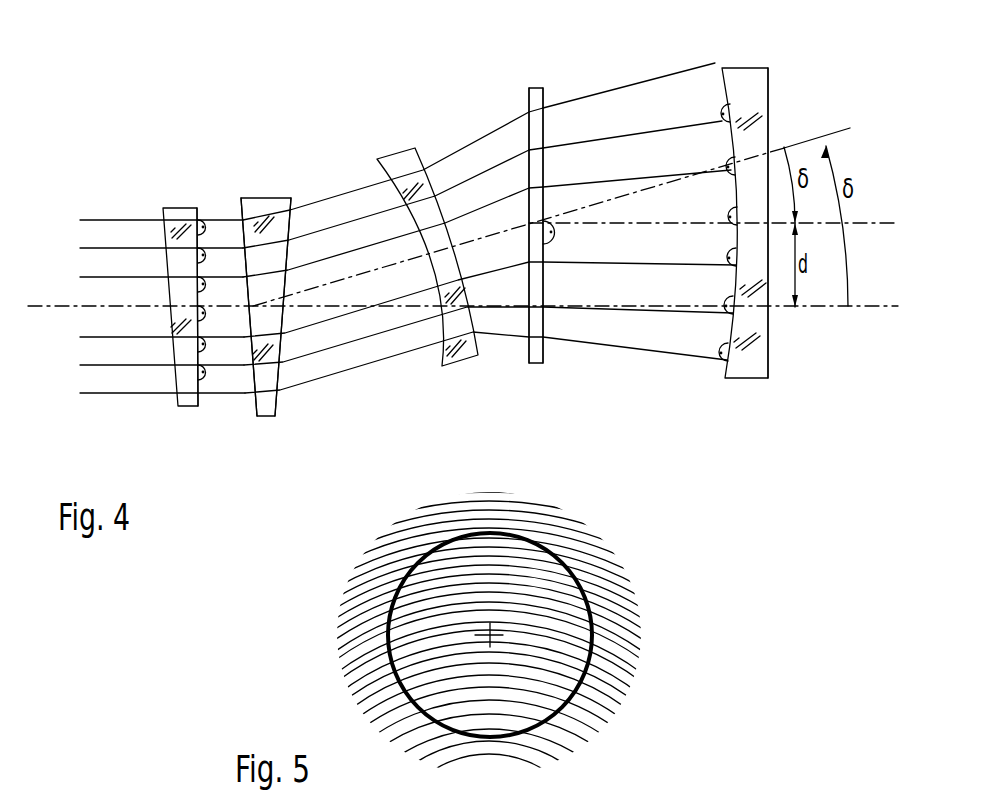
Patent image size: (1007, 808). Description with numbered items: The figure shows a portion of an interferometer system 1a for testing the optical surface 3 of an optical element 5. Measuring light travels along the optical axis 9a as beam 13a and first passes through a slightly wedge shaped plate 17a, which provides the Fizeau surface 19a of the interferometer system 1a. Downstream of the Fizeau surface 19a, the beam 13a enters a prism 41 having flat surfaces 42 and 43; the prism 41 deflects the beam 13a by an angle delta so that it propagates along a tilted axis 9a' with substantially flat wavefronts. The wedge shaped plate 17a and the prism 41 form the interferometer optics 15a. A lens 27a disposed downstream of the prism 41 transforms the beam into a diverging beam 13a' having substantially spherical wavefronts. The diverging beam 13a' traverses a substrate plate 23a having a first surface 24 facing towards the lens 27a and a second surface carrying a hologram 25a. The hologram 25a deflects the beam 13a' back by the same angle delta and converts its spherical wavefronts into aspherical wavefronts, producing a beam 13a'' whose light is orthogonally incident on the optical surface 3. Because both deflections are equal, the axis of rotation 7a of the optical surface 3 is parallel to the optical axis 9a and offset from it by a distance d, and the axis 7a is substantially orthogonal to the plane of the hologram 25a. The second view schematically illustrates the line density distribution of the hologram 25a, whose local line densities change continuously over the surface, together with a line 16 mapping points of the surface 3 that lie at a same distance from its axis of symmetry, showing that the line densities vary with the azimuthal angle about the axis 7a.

In FIG. 4, the interferometer system 1a is at (233, 77).
In FIG. 4, the optical surface 3 is at (722, 376).
In FIG. 4, the optical element 5 is at (748, 380).
In FIG. 4, the axis of rotation 7a is at (877, 222).
In FIG. 5, the axis of rotation 7a is at (490, 635).
In FIG. 4, the optical axis 9a is at (465, 272).
In FIG. 4, the deflected beam axis 9a' is at (561, 245).
In FIG. 4, the beam 13a is at (162, 273).
In FIG. 4, the diverging beam 13a' is at (393, 231).
In FIG. 4, the beam 13a'' is at (639, 185).
In FIG. 4, the interferometer optics 15a is at (426, 98).
In FIG. 5, the line 16 is at (389, 618).
In FIG. 4, the wedge shaped plate 17a is at (178, 207).
In FIG. 4, the Fizeau surface 19a is at (198, 408).
In FIG. 4, the substrate plate 23a is at (536, 366).
In FIG. 4, the first surface 24 is at (527, 361).
In FIG. 4, the hologram 25a is at (546, 360).
In FIG. 5, the hologram 25a is at (668, 637).
In FIG. 4, the lens 27a is at (457, 366).
In FIG. 4, the prism 41 is at (262, 197).
In FIG. 4, the flat surface 42 is at (256, 417).
In FIG. 4, the flat surface 43 is at (277, 417).